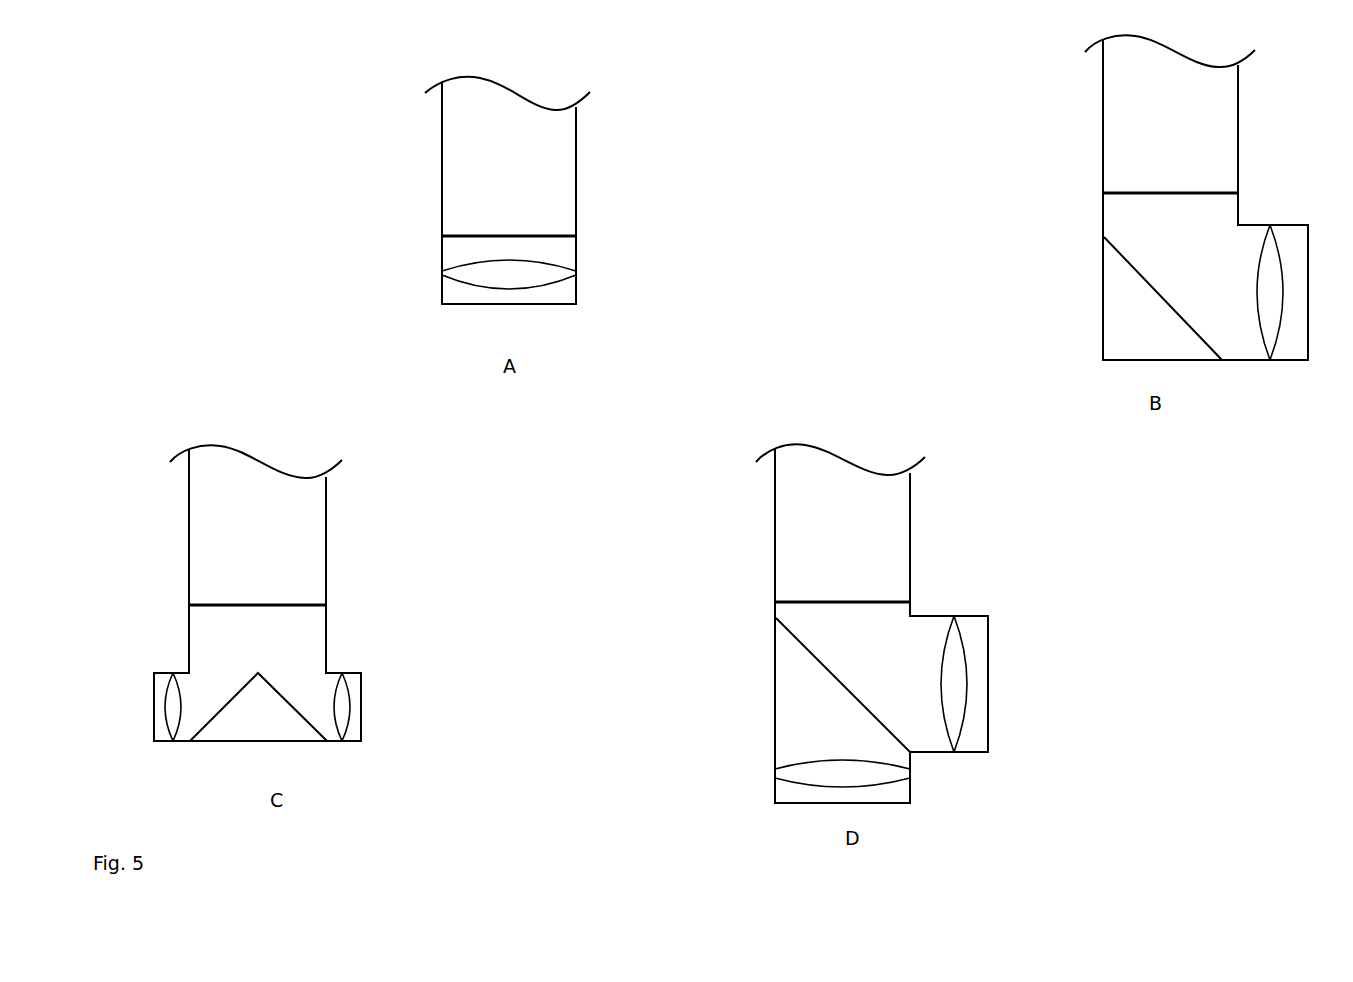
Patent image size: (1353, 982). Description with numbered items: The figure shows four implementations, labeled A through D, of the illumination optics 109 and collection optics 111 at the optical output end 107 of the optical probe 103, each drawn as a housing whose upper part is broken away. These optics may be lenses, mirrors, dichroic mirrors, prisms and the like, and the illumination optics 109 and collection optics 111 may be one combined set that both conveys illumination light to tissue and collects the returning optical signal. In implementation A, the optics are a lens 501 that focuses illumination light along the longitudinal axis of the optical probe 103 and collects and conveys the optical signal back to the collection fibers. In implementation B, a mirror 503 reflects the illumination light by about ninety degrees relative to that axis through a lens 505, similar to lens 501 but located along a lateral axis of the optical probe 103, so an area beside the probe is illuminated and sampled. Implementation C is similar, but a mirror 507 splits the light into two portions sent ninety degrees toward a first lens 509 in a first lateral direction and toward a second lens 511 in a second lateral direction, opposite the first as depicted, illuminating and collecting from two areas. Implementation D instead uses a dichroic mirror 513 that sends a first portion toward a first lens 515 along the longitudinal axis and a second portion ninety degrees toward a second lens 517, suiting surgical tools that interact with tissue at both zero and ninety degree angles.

The optical probe 103 is at (525, 179).
The optical output end 107 is at (497, 319).
The illumination optics 109 is at (612, 448).
The collection optics 111 is at (451, 254).
The lens 501 is at (560, 274).
The mirror 503 is at (1140, 270).
The lens 505 is at (1272, 268).
The mirror 507 is at (270, 680).
The first lens 509 is at (348, 703).
The second lens 511 is at (170, 708).
The dichroic mirror 513 is at (822, 658).
The first lens 515 is at (800, 770).
The second lens 517 is at (961, 652).